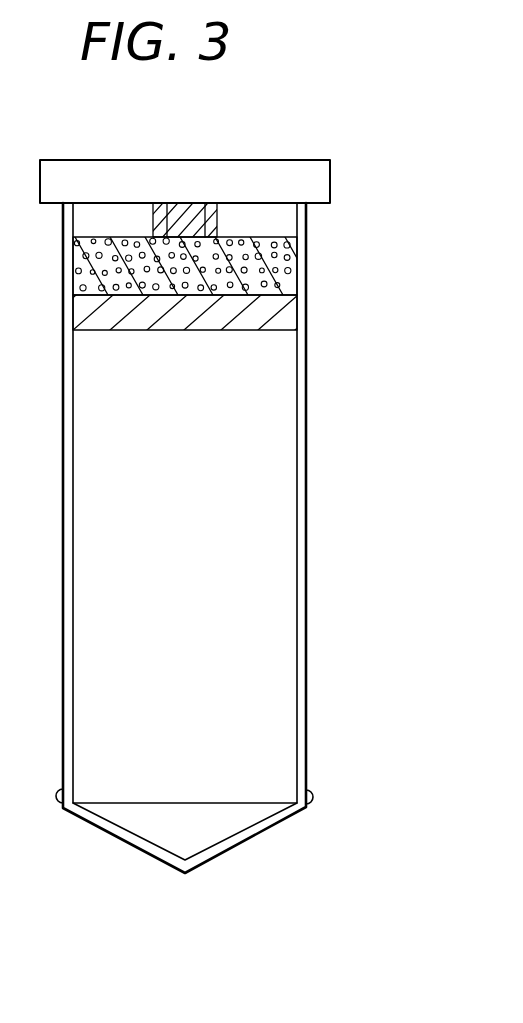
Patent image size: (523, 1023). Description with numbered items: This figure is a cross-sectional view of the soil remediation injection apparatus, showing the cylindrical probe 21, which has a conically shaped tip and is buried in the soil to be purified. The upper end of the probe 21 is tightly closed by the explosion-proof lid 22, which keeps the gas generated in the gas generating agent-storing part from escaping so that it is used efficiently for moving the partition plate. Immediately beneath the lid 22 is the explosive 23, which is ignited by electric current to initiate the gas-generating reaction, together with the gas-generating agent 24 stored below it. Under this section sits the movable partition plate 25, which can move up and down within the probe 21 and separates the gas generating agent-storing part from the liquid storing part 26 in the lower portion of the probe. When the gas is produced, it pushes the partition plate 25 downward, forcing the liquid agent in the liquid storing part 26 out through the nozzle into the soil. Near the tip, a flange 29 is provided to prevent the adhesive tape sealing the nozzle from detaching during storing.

The cylindrical probe 21 is at (306, 492).
The lid 22 is at (305, 186).
The explosive 23 is at (217, 215).
The packing layer 24 is at (297, 268).
The movable partition plate 25 is at (263, 318).
The liquid storing part 26 is at (263, 403).
The flange 29 is at (313, 800).